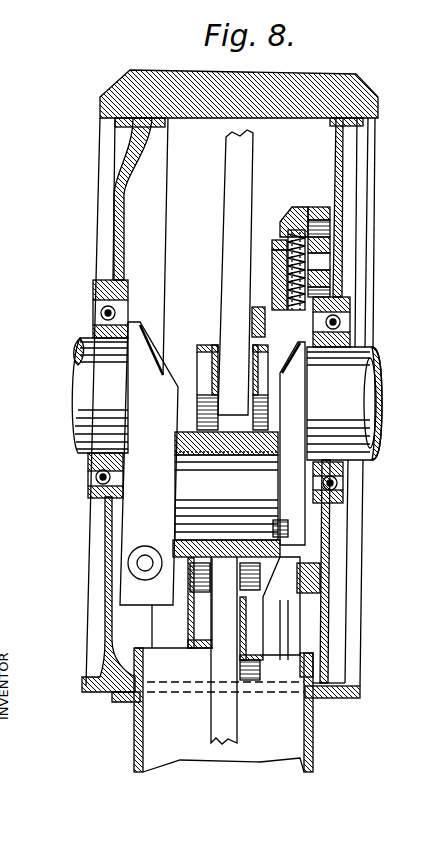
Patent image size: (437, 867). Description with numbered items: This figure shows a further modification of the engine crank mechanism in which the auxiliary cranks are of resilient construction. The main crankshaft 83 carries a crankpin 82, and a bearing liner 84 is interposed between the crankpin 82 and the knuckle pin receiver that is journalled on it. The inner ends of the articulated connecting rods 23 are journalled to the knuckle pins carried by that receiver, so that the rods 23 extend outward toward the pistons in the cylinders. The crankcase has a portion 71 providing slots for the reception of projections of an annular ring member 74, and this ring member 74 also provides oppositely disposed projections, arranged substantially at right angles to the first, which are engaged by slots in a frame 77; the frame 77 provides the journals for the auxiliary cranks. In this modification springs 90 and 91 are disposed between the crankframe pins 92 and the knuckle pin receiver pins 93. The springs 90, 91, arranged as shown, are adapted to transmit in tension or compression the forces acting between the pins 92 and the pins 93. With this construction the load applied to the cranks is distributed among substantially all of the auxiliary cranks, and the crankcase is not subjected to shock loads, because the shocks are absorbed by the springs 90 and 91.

The articulated connecting rod 23 is at (230, 216).
The crankcase portion 71 is at (341, 290).
The annular ring member 74 is at (327, 268).
The frame 77 is at (330, 250).
The crankpin 82 is at (230, 494).
The main crankshaft 83 is at (95, 387).
The bearing liner 84 is at (178, 466).
The spring 90 is at (280, 232).
The spring 91 is at (272, 288).
The crankframe pin 92 is at (340, 221).
The knuckle pin receiver pin 93 is at (252, 317).